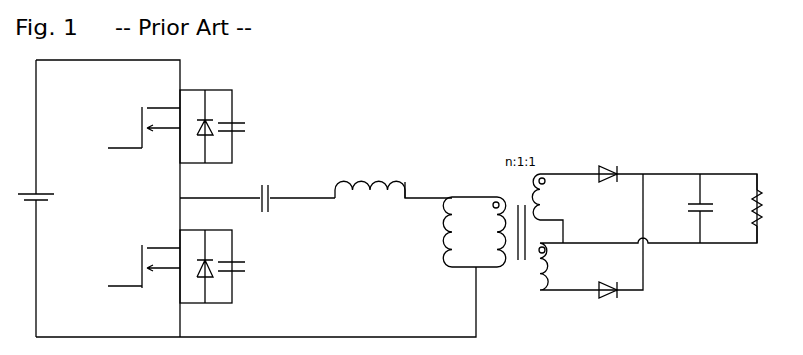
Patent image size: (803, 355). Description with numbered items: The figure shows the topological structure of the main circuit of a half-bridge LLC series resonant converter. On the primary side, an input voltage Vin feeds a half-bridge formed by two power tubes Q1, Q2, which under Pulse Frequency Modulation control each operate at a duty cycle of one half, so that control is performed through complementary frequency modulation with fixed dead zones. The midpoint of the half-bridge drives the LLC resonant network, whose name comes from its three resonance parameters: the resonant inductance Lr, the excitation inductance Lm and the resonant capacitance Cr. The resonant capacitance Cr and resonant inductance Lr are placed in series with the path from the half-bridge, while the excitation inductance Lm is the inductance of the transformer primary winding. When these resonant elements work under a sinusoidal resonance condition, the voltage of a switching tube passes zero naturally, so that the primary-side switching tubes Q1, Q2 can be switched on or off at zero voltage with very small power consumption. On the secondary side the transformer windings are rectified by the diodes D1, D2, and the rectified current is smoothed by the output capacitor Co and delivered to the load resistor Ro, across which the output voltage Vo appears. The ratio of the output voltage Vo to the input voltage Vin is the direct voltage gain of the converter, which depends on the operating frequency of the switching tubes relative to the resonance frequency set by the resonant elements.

The input voltage Vin is at (48, 197).
The power tube Q1 is at (175, 266).
The power tube Q2 is at (175, 126).
The resonant capacitance Cr is at (264, 189).
The resonant inductance Lr is at (370, 176).
The excitation inductance Lm is at (468, 232).
The first rectifier diode D1 is at (608, 183).
The second rectifier diode D2 is at (608, 299).
The output capacitor Co is at (694, 208).
The load resistor Ro is at (745, 211).
The output voltage Vo is at (770, 208).